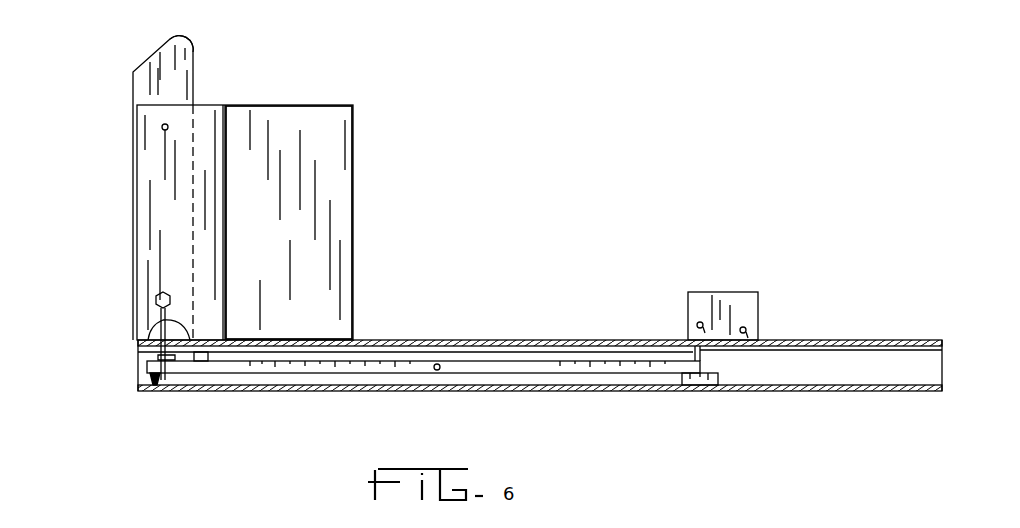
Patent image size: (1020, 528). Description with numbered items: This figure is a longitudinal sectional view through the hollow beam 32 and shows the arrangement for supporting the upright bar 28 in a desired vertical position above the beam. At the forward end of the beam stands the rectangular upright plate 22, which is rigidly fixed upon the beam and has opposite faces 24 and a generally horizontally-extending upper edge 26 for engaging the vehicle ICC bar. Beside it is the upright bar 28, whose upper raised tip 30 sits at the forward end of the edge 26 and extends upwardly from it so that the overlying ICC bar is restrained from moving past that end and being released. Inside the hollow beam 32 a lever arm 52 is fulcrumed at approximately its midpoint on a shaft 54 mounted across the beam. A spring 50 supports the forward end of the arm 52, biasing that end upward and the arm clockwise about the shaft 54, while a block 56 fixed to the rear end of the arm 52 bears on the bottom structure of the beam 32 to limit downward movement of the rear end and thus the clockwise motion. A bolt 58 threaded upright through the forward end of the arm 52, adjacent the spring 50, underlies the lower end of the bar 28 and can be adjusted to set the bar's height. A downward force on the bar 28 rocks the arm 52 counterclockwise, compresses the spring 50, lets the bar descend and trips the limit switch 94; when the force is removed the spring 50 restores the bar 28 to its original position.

The upright plate 22 is at (353, 203).
The face 24 is at (300, 250).
The upper edge 26 is at (287, 105).
The upright bar 28 is at (130, 172).
The raised tip 30 is at (183, 38).
The hollow beam 32 is at (537, 340).
The spring 50 is at (148, 378).
The lever arm 52 is at (542, 367).
The shaft 54 is at (435, 372).
The block 56 is at (703, 391).
The bolt 58 is at (162, 355).
The limit switch 94 is at (727, 292).